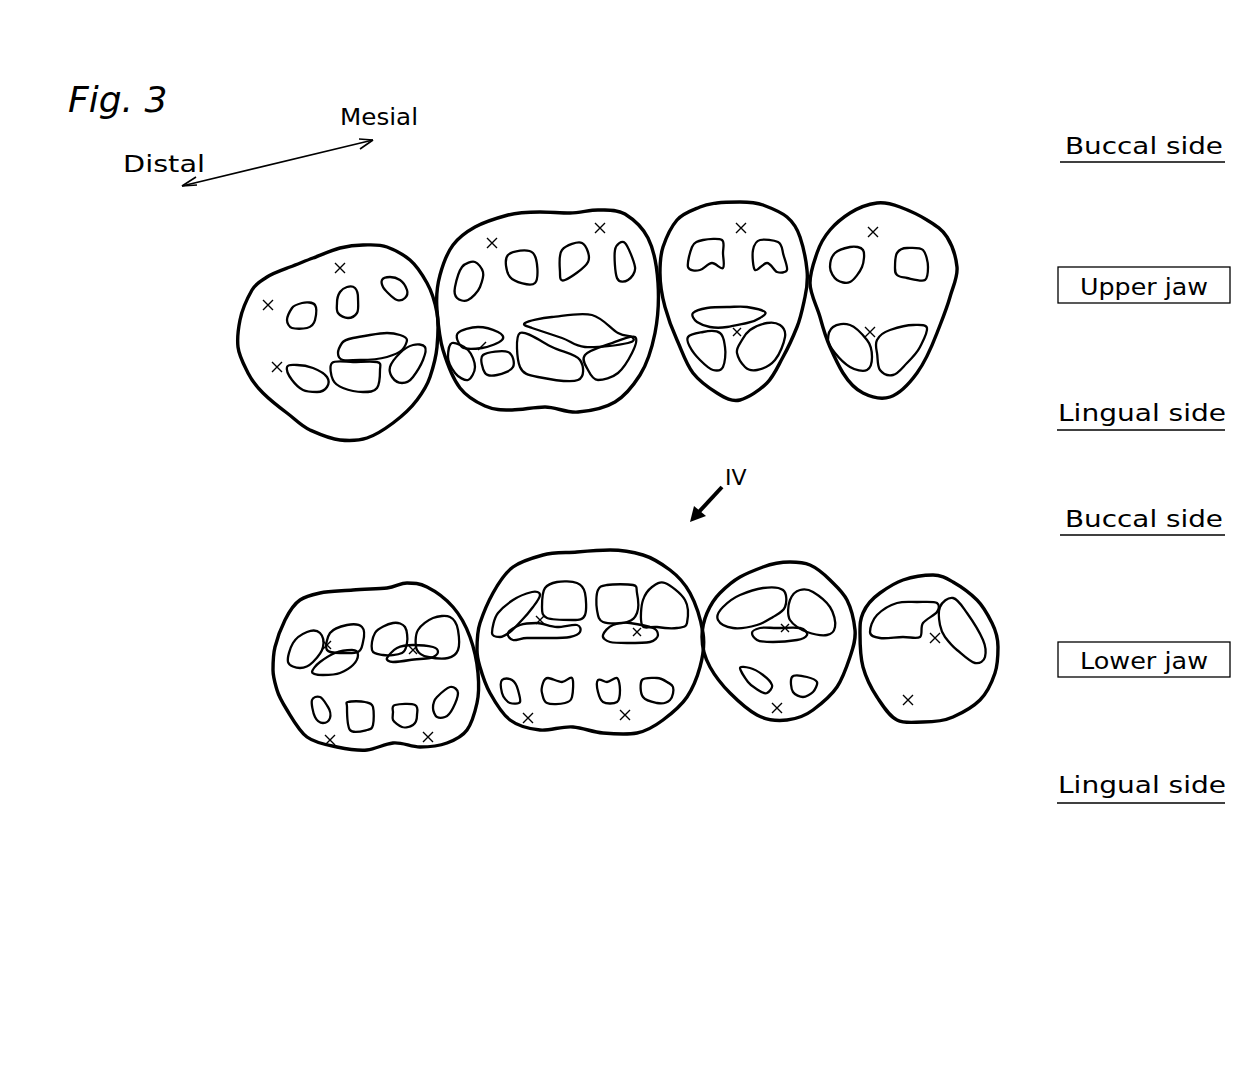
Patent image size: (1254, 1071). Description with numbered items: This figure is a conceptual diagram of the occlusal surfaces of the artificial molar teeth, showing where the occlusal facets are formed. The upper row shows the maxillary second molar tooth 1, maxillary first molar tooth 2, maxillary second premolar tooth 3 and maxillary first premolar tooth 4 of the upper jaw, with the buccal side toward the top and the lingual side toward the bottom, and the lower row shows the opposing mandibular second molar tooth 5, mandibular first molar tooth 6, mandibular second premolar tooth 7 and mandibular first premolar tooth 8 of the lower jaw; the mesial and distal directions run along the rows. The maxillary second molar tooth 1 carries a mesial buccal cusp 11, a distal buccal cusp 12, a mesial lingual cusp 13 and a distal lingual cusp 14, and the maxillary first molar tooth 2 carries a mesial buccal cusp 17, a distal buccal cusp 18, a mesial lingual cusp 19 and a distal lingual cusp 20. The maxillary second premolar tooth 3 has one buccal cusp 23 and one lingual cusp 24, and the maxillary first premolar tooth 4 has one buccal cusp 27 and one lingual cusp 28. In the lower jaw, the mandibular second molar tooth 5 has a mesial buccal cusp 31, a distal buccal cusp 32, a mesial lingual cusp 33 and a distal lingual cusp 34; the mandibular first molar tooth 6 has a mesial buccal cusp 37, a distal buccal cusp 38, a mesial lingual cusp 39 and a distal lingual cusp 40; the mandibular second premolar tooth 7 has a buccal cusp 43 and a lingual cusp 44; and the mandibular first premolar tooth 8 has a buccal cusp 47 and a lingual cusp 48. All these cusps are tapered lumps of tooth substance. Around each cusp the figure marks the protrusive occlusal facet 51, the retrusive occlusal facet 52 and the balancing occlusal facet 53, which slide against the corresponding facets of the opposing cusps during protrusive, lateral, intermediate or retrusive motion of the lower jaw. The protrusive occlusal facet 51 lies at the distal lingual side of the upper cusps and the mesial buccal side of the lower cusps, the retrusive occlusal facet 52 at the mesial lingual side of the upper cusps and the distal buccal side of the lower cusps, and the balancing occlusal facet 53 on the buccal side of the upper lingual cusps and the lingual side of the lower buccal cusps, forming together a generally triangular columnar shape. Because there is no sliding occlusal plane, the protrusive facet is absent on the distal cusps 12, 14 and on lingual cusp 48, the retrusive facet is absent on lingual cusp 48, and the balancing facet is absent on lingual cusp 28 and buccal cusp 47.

The maxillary second molar tooth 1 is at (283, 405).
The maxillary first molar tooth 2 is at (515, 400).
The maxillary second premolar tooth 3 is at (720, 385).
The maxillary first premolar tooth 4 is at (878, 375).
The mandibular second molar tooth 5 is at (300, 617).
The mandibular first molar tooth 6 is at (595, 578).
The mandibular second premolar tooth 7 is at (790, 578).
The mandibular first premolar tooth 8 is at (940, 590).
The mesial buccal cusp 11 is at (340, 268).
The distal buccal cusp 12 is at (268, 305).
The mesial lingual cusp 13 is at (405, 365).
The distal lingual cusp 14 is at (277, 367).
The mesial buccal cusp 17 is at (600, 228).
The distal buccal cusp 18 is at (492, 243).
The mesial lingual cusp 19 is at (587, 363).
The distal lingual cusp 20 is at (480, 350).
The buccal cusp 23 is at (741, 228).
The lingual cusp 24 is at (737, 340).
The buccal cusp 27 is at (873, 232).
The lingual cusp 28 is at (870, 332).
The mesial buccal cusp 31 is at (413, 650).
The distal buccal cusp 32 is at (327, 645).
The mesial lingual cusp 33 is at (428, 737).
The distal lingual cusp 34 is at (330, 740).
The mesial buccal cusp 37 is at (637, 630).
The distal buccal cusp 38 is at (540, 620).
The mesial lingual cusp 39 is at (625, 715).
The distal lingual cusp 40 is at (528, 718).
The buccal cusp 43 is at (785, 628).
The lingual cusp 44 is at (777, 708).
The buccal cusp 47 is at (935, 638).
The lingual cusp 48 is at (908, 700).
The protrusive occlusal facet 51 is at (340, 300).
The retrusive occlusal facet 52 is at (300, 315).
The balancing occlusal facet 53 is at (395, 340).